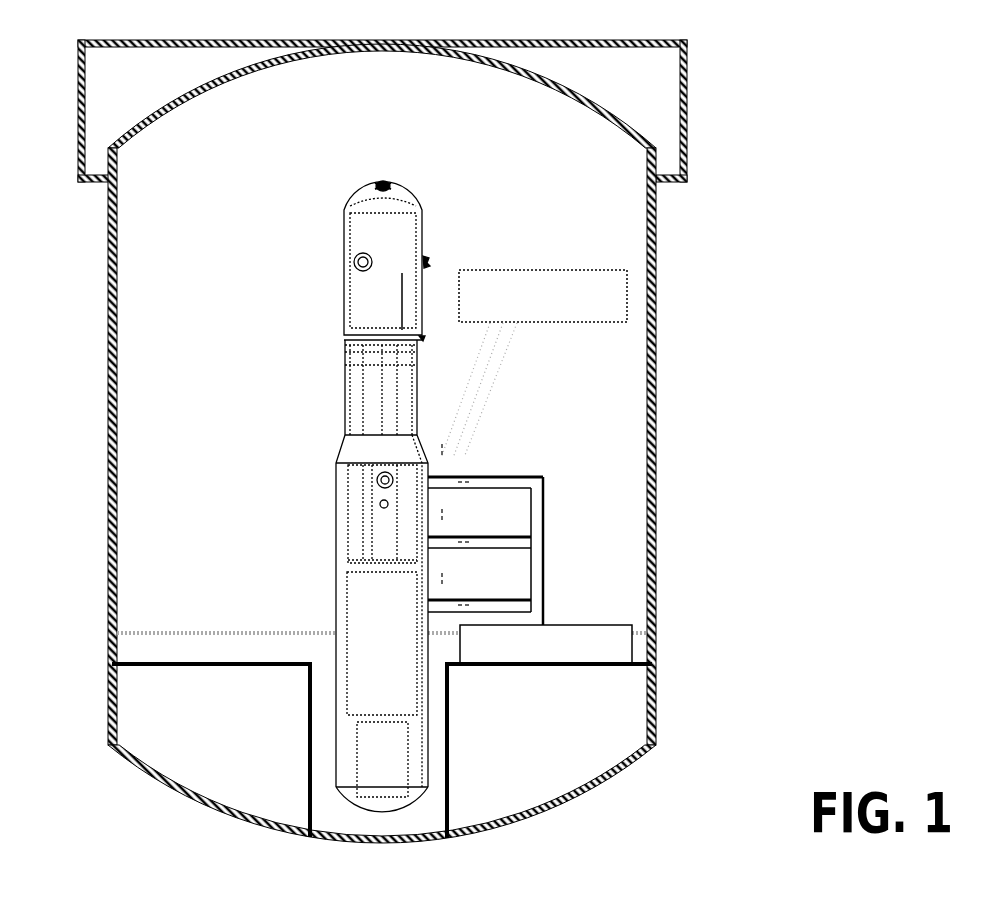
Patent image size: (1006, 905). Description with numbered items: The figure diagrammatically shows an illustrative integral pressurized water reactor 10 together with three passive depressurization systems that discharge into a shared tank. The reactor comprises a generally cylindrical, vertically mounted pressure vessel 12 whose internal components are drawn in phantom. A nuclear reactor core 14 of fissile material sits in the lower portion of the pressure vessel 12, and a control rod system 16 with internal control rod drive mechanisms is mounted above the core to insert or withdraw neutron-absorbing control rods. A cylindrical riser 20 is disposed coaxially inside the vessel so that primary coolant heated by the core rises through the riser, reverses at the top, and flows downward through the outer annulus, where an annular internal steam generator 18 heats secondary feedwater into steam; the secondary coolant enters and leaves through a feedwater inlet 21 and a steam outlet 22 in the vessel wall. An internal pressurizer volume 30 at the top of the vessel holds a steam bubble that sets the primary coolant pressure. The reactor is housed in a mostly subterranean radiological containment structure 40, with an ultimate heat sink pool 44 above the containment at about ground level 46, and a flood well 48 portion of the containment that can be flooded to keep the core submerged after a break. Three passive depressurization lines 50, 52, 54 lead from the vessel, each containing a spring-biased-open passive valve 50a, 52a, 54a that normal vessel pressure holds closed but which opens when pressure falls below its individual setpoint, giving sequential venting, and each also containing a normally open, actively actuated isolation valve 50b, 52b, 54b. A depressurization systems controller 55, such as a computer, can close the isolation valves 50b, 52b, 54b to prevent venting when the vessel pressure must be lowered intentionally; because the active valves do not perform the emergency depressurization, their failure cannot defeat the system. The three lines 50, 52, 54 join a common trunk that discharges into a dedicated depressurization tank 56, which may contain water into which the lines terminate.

The pressurized water reactor 10 is at (283, 775).
The pressure vessel 12 is at (332, 545).
The nuclear reactor core 14 is at (391, 768).
The control rod system 16 is at (391, 668).
The internal steam generator 18 is at (405, 410).
The cylindrical riser 20 is at (380, 447).
The feedwater inlet 21 is at (378, 503).
The steam outlet 22 is at (378, 478).
The internal pressurizer volume 30 is at (380, 268).
The radiological containment structure 40 is at (648, 218).
The ultimate heat sink pool 44 is at (131, 80).
The ground level 46 is at (648, 50).
The flood well 48 is at (680, 628).
The passive depressurization line 50 is at (512, 478).
The biased-open passive valve 50a is at (463, 477).
The actively actuated isolation valve 50b is at (447, 458).
The passive depressurization line 52 is at (510, 538).
The biased-open passive valve 52a is at (472, 537).
The actively actuated isolation valve 52b is at (452, 520).
The passive depressurization line 54 is at (500, 602).
The biased-open passive valve 54a is at (470, 600).
The actively actuated isolation valve 54b is at (447, 582).
The depressurization systems controller 55 is at (513, 270).
The depressurization tank 56 is at (553, 654).